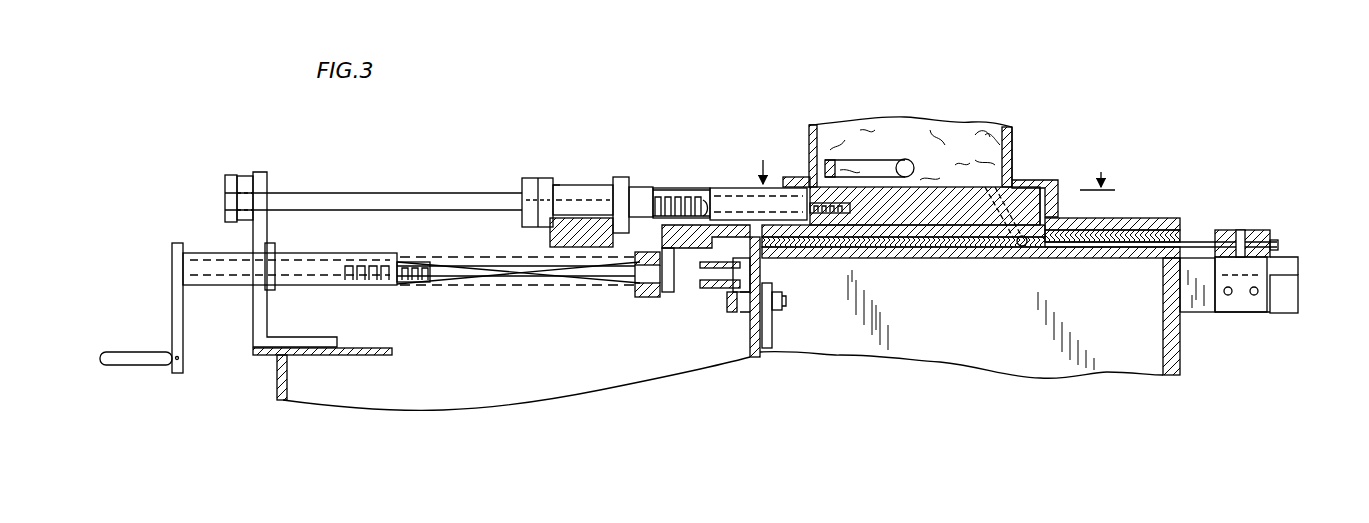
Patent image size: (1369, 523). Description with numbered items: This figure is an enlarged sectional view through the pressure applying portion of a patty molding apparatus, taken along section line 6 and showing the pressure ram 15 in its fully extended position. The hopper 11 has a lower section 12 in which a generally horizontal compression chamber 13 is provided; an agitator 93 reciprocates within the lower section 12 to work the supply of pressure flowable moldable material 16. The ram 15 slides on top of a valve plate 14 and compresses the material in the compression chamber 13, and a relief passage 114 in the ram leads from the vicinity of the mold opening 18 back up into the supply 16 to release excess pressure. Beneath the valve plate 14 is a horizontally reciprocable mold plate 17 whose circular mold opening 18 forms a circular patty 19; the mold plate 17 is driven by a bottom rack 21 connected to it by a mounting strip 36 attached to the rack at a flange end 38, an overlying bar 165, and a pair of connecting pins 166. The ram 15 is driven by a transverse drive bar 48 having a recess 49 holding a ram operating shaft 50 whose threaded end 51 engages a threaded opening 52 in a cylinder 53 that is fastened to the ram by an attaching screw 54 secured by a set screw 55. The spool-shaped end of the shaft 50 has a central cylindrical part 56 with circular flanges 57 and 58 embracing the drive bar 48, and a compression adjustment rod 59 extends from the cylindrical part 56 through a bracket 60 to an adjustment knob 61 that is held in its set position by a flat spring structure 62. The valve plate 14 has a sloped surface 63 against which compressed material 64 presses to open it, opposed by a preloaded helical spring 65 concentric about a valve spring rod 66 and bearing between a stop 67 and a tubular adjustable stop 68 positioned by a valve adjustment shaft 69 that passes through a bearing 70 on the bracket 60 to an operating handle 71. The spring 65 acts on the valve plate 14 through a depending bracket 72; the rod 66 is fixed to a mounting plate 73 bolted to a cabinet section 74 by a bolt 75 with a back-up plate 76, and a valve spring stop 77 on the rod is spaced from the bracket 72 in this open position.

The section line 6- 6 is at (935, 164).
The hopper 11 is at (970, 122).
The lower section 12 is at (1018, 150).
The compression chamber 13 is at (1033, 180).
The valve plate 14 is at (952, 246).
The pressure ram 15 is at (897, 240).
The moldable material 16 is at (932, 153).
The mold plate 17 is at (832, 250).
The mold opening 18 is at (1111, 258).
The patty 19 is at (1062, 257).
The bottom rack 21 is at (1281, 314).
The mounting strip 36 is at (1278, 258).
The flange end 38 is at (1238, 302).
The drive bar 48 is at (552, 233).
The recess 49 is at (567, 184).
The ram operating shaft 50 is at (641, 198).
The threaded end 51 is at (673, 194).
The threaded opening 52 is at (700, 192).
The cylinder 53 is at (740, 188).
The attaching screw 54 is at (762, 255).
The set screw 55 is at (869, 152).
The central cylindrical part 56 is at (585, 192).
The circular flange 57 is at (546, 180).
The circular flange 58 is at (619, 178).
The compression adjustment rod 59 is at (430, 196).
The bracket 60 is at (267, 185).
The adjustment knob 61 is at (228, 183).
The flat spring structure 62 is at (242, 178).
The sloped surface 63 is at (1013, 250).
The compressed material 64 is at (1058, 217).
The helical spring 65 is at (522, 288).
The valve spring rod 66 is at (443, 288).
The stop 67 is at (640, 298).
The adjustable stop 68 is at (357, 287).
The valve adjustment shaft 69 is at (314, 288).
The bearing 70 is at (275, 248).
The operating handle 71 is at (188, 330).
The depending bracket 72 is at (680, 292).
The mounting plate 73 is at (740, 357).
The cabinet section 74 is at (757, 357).
The bolt 75 is at (782, 296).
The back-up plate 76 is at (775, 333).
The valve spring stop 77 is at (716, 290).
The agitator 93 is at (888, 160).
The relief passage 114 is at (983, 198).
The overlying bar 165 is at (1268, 232).
The connecting pin 166 is at (1241, 230).